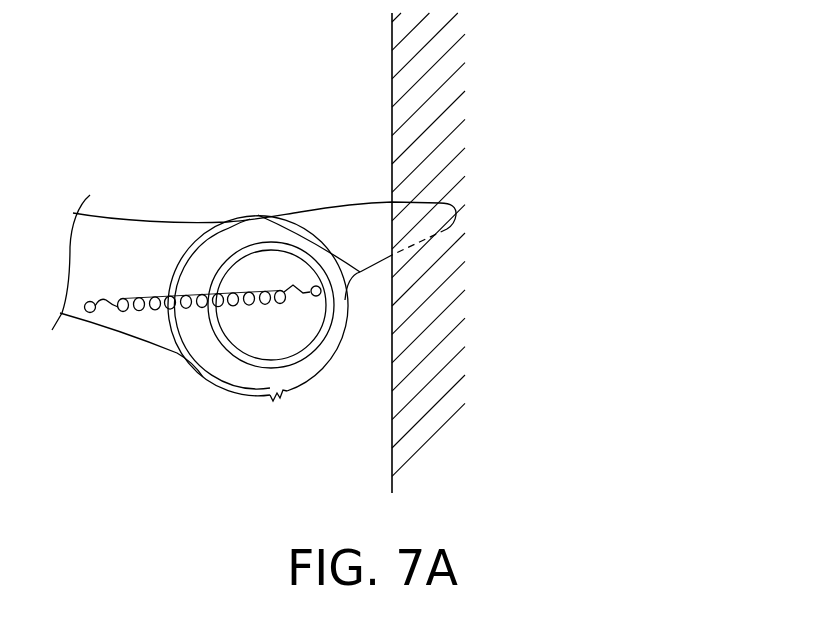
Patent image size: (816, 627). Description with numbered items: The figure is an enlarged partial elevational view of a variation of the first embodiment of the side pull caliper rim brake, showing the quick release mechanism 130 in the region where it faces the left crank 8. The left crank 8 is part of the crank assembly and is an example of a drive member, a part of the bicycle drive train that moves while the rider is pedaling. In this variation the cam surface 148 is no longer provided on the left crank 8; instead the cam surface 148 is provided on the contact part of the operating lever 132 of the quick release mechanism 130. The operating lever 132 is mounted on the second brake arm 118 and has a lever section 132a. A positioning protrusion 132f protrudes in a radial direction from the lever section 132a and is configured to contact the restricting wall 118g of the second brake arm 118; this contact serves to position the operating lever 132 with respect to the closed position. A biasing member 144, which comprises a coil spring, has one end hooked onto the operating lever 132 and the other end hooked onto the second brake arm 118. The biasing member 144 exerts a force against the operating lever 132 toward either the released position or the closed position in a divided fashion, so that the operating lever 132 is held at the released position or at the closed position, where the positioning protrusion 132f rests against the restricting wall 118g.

The left crank 8 is at (392, 83).
The second brake arm 118 is at (127, 212).
The restricting wall 118g is at (230, 222).
The quick release mechanism 130 is at (292, 200).
The operating lever 132 is at (248, 214).
The lever section 132a is at (213, 368).
The positioning protrusion 132f is at (280, 395).
The biasing member 144 is at (118, 311).
The cam surface 148 is at (357, 222).